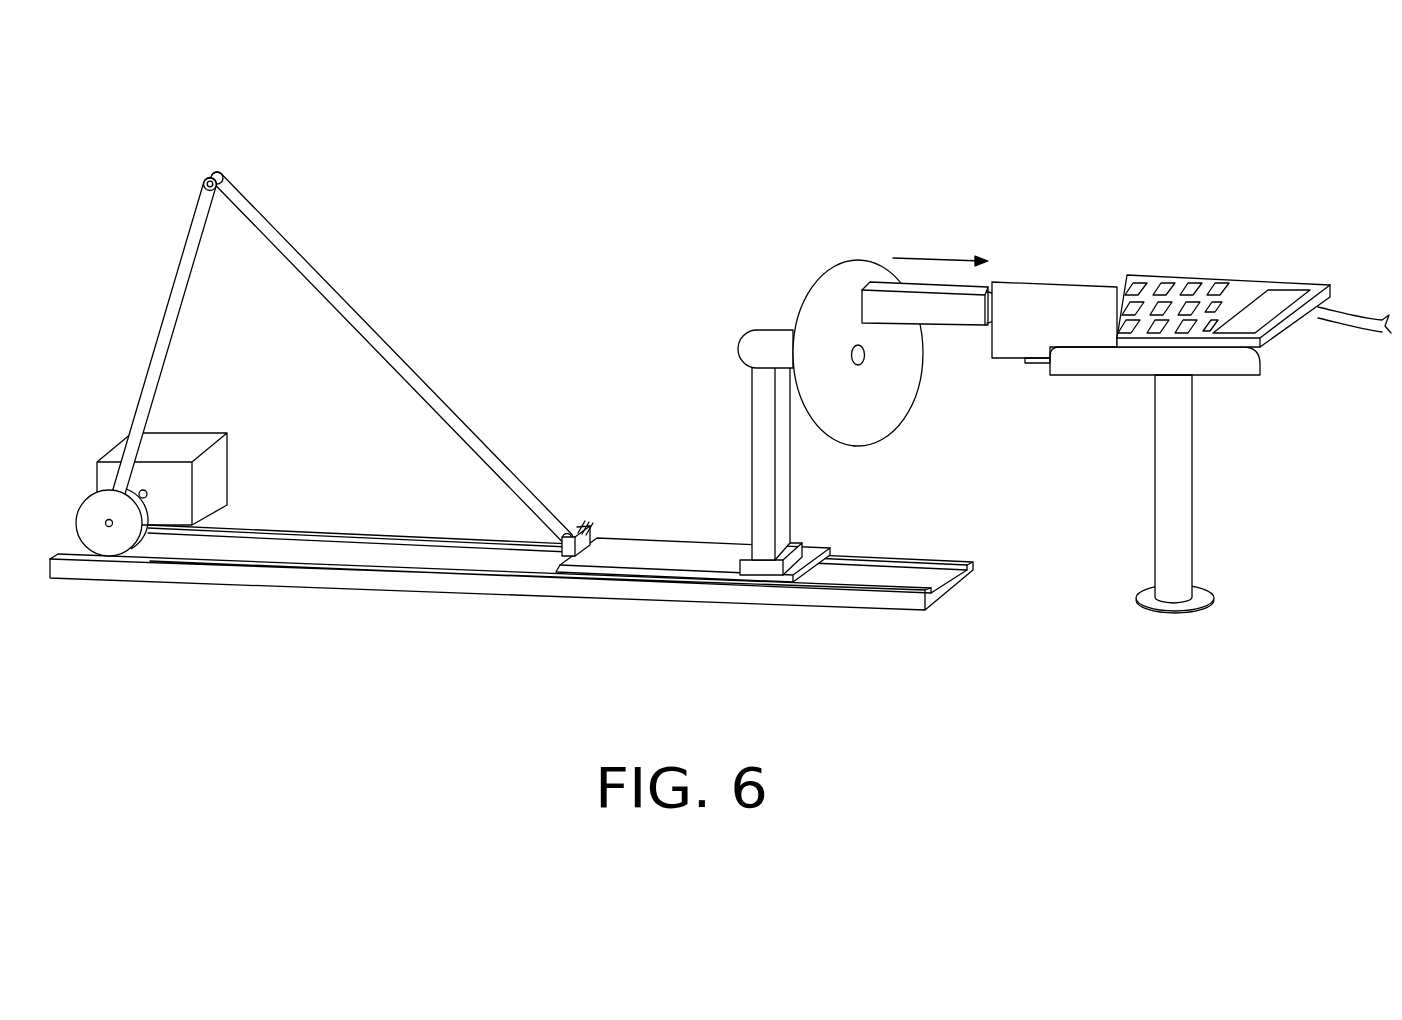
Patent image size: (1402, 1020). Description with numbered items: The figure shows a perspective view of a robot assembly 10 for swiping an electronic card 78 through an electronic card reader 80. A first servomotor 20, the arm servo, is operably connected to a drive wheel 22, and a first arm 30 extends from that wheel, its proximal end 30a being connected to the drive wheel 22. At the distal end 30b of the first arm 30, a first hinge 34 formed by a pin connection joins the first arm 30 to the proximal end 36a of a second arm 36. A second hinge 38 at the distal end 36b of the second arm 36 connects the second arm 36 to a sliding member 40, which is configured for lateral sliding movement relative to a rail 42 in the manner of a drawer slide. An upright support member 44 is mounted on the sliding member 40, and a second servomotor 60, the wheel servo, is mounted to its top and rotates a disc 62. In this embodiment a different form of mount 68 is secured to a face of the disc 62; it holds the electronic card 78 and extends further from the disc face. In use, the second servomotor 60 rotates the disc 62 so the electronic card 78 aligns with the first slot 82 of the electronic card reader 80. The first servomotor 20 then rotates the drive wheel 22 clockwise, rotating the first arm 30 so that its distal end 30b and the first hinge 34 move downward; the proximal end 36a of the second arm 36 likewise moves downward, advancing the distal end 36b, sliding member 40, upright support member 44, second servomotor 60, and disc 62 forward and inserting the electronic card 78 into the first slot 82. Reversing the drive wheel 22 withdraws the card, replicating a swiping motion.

The robot assembly 10 is at (77, 132).
The first servomotor 20 is at (112, 440).
The drive wheel 22 is at (100, 535).
The first arm 30 is at (201, 289).
The proximal end 30a is at (147, 494).
The distal end 30b is at (206, 178).
The first hinge 34 is at (220, 172).
The second arm 36 is at (411, 345).
The proximal end 36a is at (240, 182).
The distal end 36b is at (568, 528).
The second hinge 38 is at (592, 522).
The sliding member 40 is at (615, 567).
The rail 42 is at (306, 580).
The upright support member 44 is at (752, 452).
The second servomotor 60 is at (770, 330).
The disc 62 is at (806, 310).
The mount 68 is at (887, 287).
The electronic card 78 is at (1047, 328).
The electronic card reader 80 is at (1300, 280).
The first slot 82 is at (1258, 365).